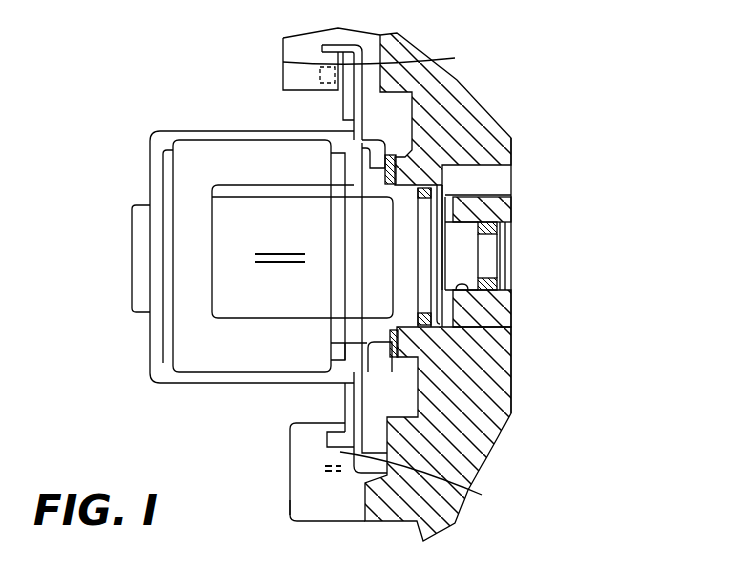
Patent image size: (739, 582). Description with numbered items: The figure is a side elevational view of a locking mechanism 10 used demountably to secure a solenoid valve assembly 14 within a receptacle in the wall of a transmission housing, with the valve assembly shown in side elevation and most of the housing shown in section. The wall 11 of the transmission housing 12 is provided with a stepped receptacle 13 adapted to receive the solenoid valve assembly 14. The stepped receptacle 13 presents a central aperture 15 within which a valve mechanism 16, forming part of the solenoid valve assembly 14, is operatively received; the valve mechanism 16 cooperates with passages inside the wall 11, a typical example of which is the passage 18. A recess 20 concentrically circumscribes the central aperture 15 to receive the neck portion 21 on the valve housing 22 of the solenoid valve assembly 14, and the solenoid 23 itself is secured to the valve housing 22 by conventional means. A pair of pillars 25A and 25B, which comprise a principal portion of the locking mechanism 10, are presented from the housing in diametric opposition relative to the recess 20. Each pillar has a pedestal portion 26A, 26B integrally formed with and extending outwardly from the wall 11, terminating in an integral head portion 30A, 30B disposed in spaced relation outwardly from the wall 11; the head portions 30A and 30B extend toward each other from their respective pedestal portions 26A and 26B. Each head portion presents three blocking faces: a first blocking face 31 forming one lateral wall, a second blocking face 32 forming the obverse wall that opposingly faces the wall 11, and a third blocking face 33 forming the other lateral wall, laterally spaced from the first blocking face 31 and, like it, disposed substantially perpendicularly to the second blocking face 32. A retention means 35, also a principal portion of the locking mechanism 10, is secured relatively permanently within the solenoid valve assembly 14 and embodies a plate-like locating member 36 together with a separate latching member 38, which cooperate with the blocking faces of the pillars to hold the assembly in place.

The locking mechanism 10 is at (243, 110).
The wall 11 is at (470, 100).
The transmission housing 12 is at (507, 108).
The stepped receptacle 13 is at (522, 266).
The solenoid valve assembly 14 is at (215, 385).
The central aperture 15 is at (467, 292).
The valve mechanism 16 is at (455, 247).
The passage 18 is at (497, 173).
The recess 20 is at (397, 197).
The neck portion 21 is at (405, 263).
The valve housing 22 is at (367, 345).
The solenoid 23 is at (145, 233).
The pillar 25A is at (297, 35).
The pillar 25B is at (297, 520).
The pedestal portion 26A is at (365, 42).
The pedestal portion 26B is at (368, 507).
The head portion 30A is at (293, 53).
The head portion 30B is at (310, 480).
The first blocking face 31 is at (307, 449).
The second blocking face 32 is at (398, 277).
The third blocking face 33 is at (297, 73).
The retention means 35 is at (345, 402).
The locating member 36 is at (365, 380).
The latching member 38 is at (500, 435).